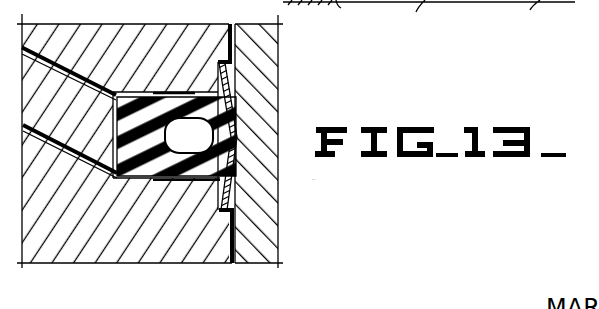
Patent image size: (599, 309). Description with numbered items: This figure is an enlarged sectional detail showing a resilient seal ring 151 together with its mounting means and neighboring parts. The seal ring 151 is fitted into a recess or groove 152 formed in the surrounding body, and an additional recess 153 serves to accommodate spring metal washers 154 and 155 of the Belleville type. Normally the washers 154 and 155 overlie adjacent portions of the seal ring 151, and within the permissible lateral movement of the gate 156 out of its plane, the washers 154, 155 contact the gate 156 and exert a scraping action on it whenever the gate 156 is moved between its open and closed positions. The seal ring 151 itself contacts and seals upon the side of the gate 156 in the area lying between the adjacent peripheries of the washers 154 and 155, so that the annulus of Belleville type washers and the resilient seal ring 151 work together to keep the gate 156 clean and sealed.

The seal ring 151 is at (147, 178).
The recess or groove 152 is at (182, 92).
The additional recess 153 is at (218, 80).
The spring metal washer 154 is at (230, 87).
The spring metal washer 155 is at (228, 192).
The gate 156 is at (280, 252).